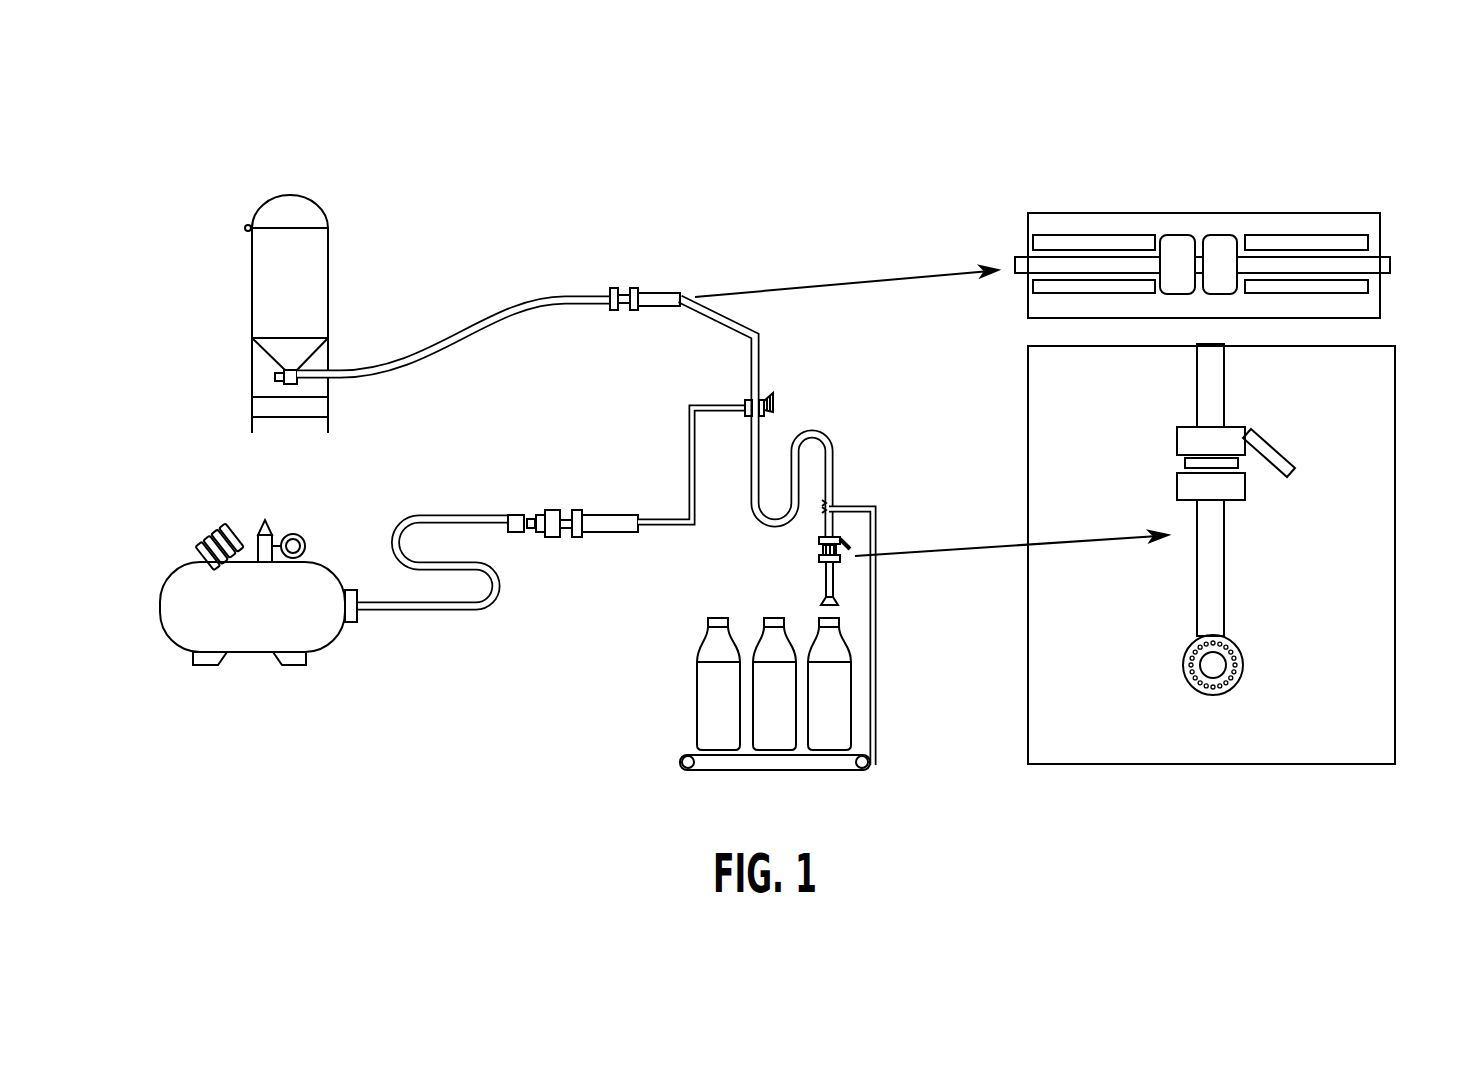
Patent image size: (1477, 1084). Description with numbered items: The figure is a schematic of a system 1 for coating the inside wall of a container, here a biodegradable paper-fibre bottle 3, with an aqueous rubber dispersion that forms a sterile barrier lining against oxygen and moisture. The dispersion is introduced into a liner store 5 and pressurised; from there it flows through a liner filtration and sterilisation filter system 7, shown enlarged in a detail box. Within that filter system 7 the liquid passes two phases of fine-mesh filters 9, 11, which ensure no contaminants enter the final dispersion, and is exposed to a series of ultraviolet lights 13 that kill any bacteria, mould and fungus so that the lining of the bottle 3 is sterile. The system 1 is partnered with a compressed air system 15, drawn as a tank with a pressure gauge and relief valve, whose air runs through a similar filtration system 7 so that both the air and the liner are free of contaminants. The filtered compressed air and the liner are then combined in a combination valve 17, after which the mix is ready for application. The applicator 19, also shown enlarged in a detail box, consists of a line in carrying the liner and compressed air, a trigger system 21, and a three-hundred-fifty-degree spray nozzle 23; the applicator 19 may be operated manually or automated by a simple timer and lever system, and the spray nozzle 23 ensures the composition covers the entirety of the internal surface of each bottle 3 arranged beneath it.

The system 1 is at (677, 173).
The bottle 3 is at (708, 700).
The liner store 5 is at (289, 195).
The liner filtration and sterilisation filter system 7 is at (627, 282).
The fine-mesh filter 9 is at (1176, 235).
The fine-mesh filter 11 is at (1221, 235).
The ultraviolet lights 13 is at (1033, 243).
The compressed air system 15 is at (170, 607).
The combination valve 17 is at (787, 410).
The applicator 19 is at (815, 577).
The trigger system 21 is at (1293, 477).
The spray nozzle 23 is at (1243, 668).